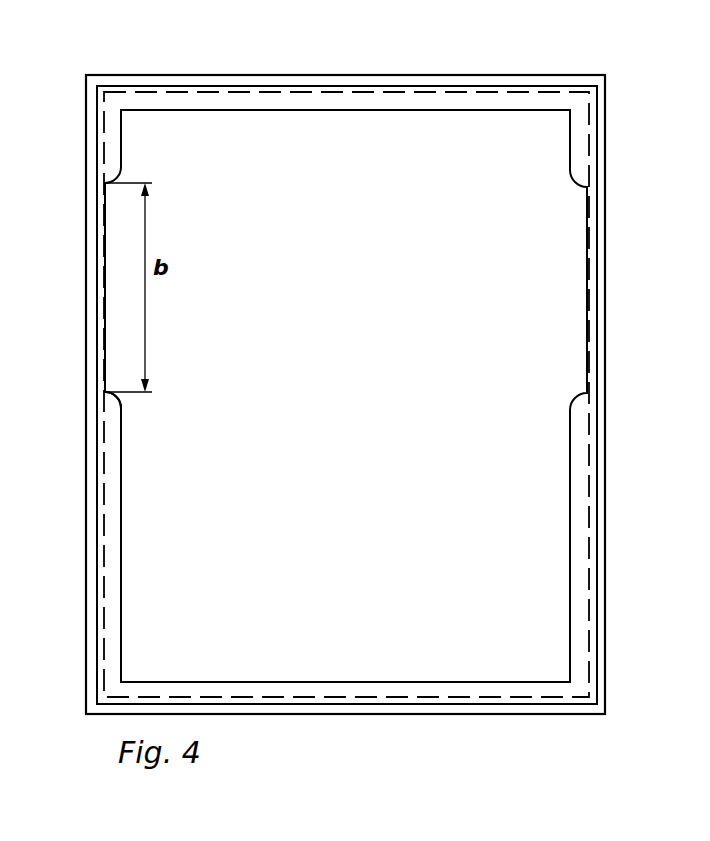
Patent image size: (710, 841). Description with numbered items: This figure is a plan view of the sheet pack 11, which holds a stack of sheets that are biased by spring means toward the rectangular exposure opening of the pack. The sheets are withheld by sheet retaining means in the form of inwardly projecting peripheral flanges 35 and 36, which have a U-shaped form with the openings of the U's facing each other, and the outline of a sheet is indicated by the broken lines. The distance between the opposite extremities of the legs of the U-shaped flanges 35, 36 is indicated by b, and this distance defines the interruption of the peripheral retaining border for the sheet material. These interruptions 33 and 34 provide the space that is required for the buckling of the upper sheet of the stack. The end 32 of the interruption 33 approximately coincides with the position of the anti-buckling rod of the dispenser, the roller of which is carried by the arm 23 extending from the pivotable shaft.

The sheet pack 11 is at (307, 155).
The arm 23 is at (172, 90).
The end of the interruption 32 is at (118, 389).
The interruption 33 is at (118, 234).
The interruption 34 is at (578, 251).
The peripheral flange 35 is at (408, 105).
The peripheral flange 36 is at (387, 692).